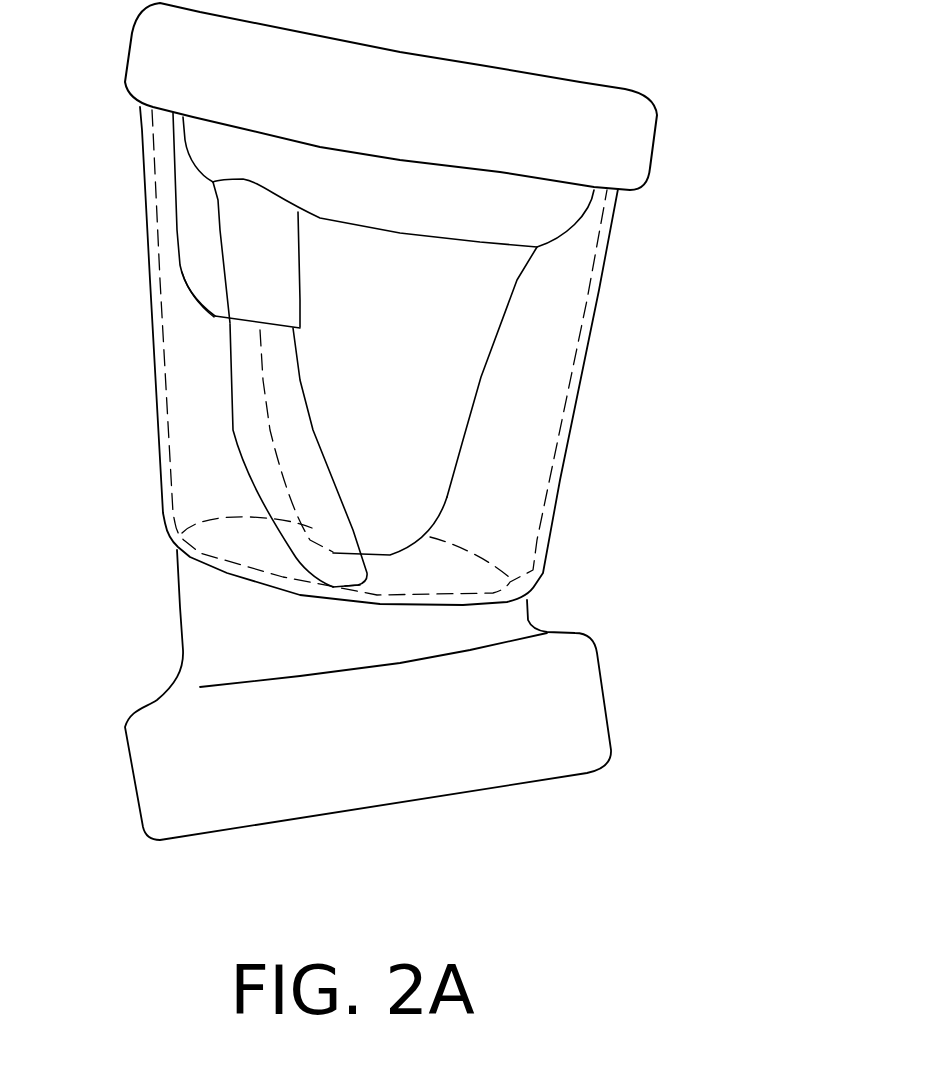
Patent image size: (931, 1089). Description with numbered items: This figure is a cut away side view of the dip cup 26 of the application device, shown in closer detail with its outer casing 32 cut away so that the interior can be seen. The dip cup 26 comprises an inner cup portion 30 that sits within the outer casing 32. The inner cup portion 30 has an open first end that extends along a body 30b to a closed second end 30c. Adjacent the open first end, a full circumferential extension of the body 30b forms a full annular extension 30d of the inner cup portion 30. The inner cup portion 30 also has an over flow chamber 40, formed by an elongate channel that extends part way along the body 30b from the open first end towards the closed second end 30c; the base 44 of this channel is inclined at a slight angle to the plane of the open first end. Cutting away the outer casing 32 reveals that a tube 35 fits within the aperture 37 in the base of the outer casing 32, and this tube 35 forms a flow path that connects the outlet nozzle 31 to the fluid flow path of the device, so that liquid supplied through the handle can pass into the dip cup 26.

The dip cup 26 is at (690, 347).
The inner cup portion 30 is at (388, 353).
The body 30b is at (467, 443).
The closed second end 30c is at (385, 553).
The full annular extension 30d is at (551, 205).
The outlet nozzle 31 is at (283, 283).
The outer casing 32 is at (606, 273).
The tube 35 is at (240, 432).
The aperture 37 is at (333, 588).
The over flow chamber 40 is at (193, 240).
The base 44 is at (208, 298).